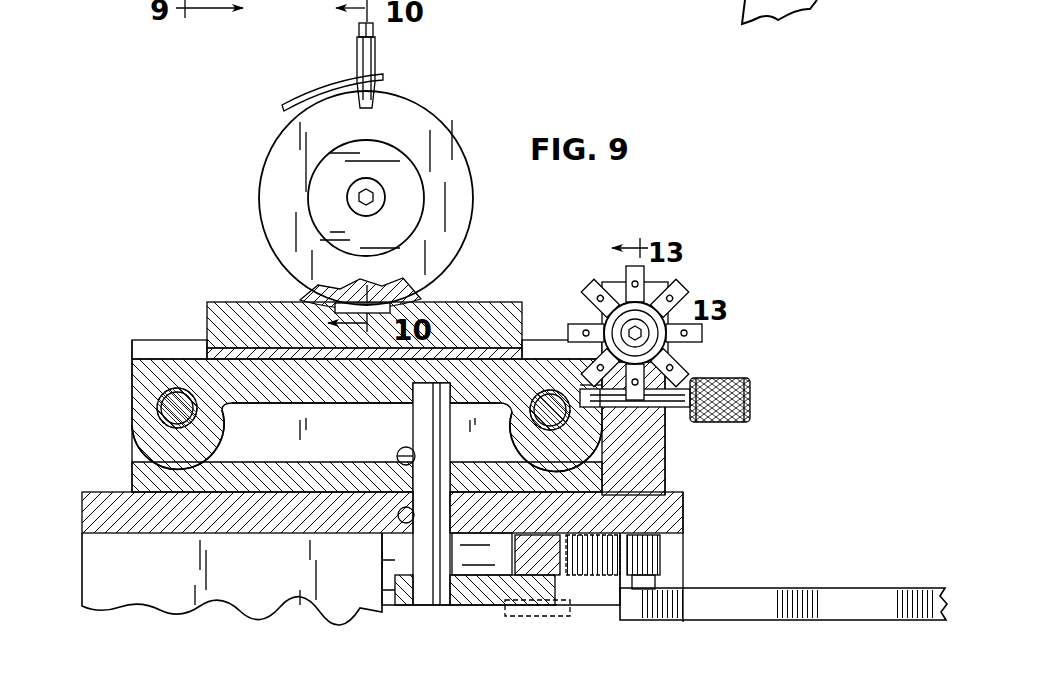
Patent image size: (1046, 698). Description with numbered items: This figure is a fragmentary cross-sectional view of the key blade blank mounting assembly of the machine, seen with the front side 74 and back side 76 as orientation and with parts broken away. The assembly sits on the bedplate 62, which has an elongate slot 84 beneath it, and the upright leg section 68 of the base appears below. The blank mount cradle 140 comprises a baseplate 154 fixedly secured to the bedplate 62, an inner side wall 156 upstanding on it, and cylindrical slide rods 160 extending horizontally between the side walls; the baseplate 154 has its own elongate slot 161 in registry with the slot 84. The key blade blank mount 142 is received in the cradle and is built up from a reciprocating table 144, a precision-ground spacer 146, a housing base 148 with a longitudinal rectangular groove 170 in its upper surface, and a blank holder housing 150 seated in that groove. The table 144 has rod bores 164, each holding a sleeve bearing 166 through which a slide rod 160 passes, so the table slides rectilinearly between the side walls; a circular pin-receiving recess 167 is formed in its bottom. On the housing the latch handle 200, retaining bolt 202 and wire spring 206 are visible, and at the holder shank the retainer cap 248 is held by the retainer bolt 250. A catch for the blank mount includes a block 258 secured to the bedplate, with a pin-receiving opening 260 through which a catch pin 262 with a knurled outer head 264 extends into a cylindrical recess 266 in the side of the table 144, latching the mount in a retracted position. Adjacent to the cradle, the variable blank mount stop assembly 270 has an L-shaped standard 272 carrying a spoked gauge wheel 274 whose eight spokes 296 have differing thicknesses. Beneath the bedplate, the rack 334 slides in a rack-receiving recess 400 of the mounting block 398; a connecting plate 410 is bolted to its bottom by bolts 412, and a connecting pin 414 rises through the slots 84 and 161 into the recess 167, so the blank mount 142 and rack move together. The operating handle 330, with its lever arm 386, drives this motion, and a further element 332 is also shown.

The bedplate 62 is at (685, 518).
The upright leg section 68 is at (302, 590).
The front side 74 is at (745, 546).
The back side 76 is at (80, 560).
The elongate slot 84 is at (408, 524).
The blank mount cradle 140 is at (132, 478).
The key blade blank mount 142 is at (200, 236).
The reciprocating table 144 is at (150, 372).
The spacer 146 is at (207, 352).
The housing base 148 is at (207, 305).
The blank holder housing 150 is at (262, 147).
The baseplate 154 is at (172, 498).
The inner side wall 156 is at (250, 498).
The slide rods 160 is at (210, 430).
The elongate slot 161 is at (402, 462).
The rod bores 164 is at (160, 410).
The sleeve bearing 166 is at (200, 412).
The pin-receiving recess 167 is at (416, 392).
The rectangular groove 170 is at (305, 292).
The handle 200 is at (376, 60).
The retaining bolt 202 is at (374, 27).
The wire spring 206 is at (316, 88).
The retainer cap 248 is at (402, 160).
The retainer bolt 250 is at (382, 193).
The block 258 is at (665, 478).
The pin-receiving opening 260 is at (660, 440).
The catch pin 262 is at (692, 410).
The knurled outer head 264 is at (752, 392).
The cylindrical recess 266 is at (574, 388).
The variable blank mount stop assembly 270 is at (702, 252).
The standard 272 is at (612, 290).
The spoked gauge wheel 274 is at (702, 280).
The spokes 296 is at (560, 345).
The operating handle 330 is at (890, 586).
The bolt 332 is at (652, 566).
The rack 334 is at (536, 554).
The lever arm 386 is at (765, 22).
The mounting block 398 is at (383, 570).
The rack-receiving recess 400 is at (530, 526).
The connecting plate 410 is at (395, 600).
The bolts 412 is at (542, 620).
The connecting pin 414 is at (388, 545).